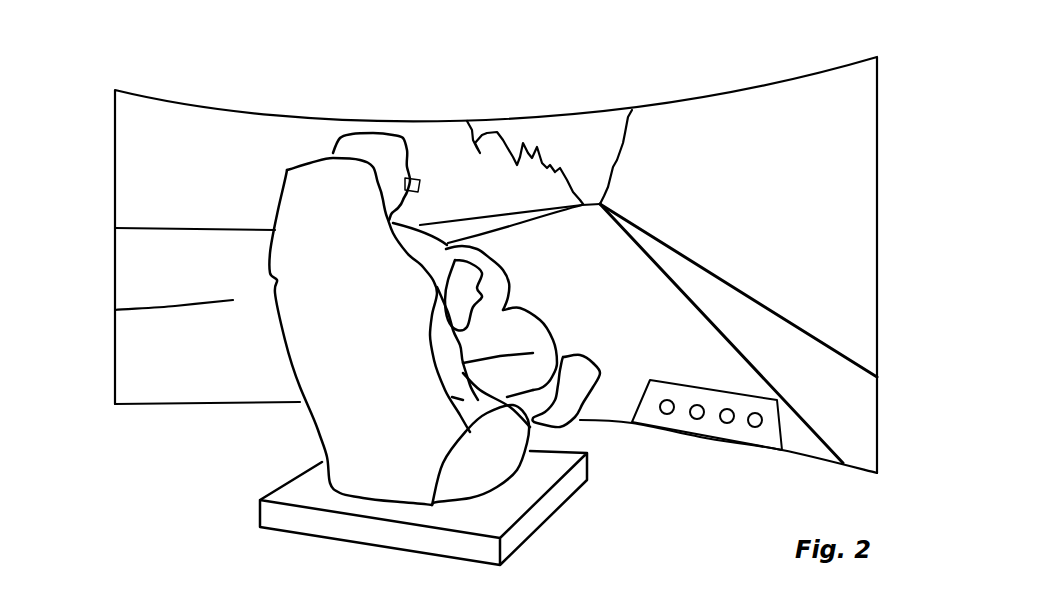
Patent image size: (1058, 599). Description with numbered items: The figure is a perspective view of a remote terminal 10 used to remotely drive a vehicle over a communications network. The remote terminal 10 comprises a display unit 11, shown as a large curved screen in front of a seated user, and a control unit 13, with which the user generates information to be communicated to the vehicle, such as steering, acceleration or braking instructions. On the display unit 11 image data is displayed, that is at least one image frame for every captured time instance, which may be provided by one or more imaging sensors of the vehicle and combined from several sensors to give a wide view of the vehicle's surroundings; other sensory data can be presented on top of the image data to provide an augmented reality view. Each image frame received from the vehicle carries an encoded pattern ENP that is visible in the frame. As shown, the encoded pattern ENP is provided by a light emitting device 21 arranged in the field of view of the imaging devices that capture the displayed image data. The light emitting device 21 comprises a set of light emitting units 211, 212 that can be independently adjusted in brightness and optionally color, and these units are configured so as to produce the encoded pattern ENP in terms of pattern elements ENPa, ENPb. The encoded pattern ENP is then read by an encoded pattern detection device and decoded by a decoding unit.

The remote terminal 10 is at (115, 41).
The display unit 11 is at (122, 145).
The control unit 13 is at (548, 323).
The light emitting device 21 is at (700, 380).
The light emitting unit 211 is at (755, 412).
The light emitting unit 212 is at (728, 405).
The encoded pattern ENP is at (785, 421).
The pattern element ENPa is at (762, 440).
The pattern element ENPb is at (714, 431).